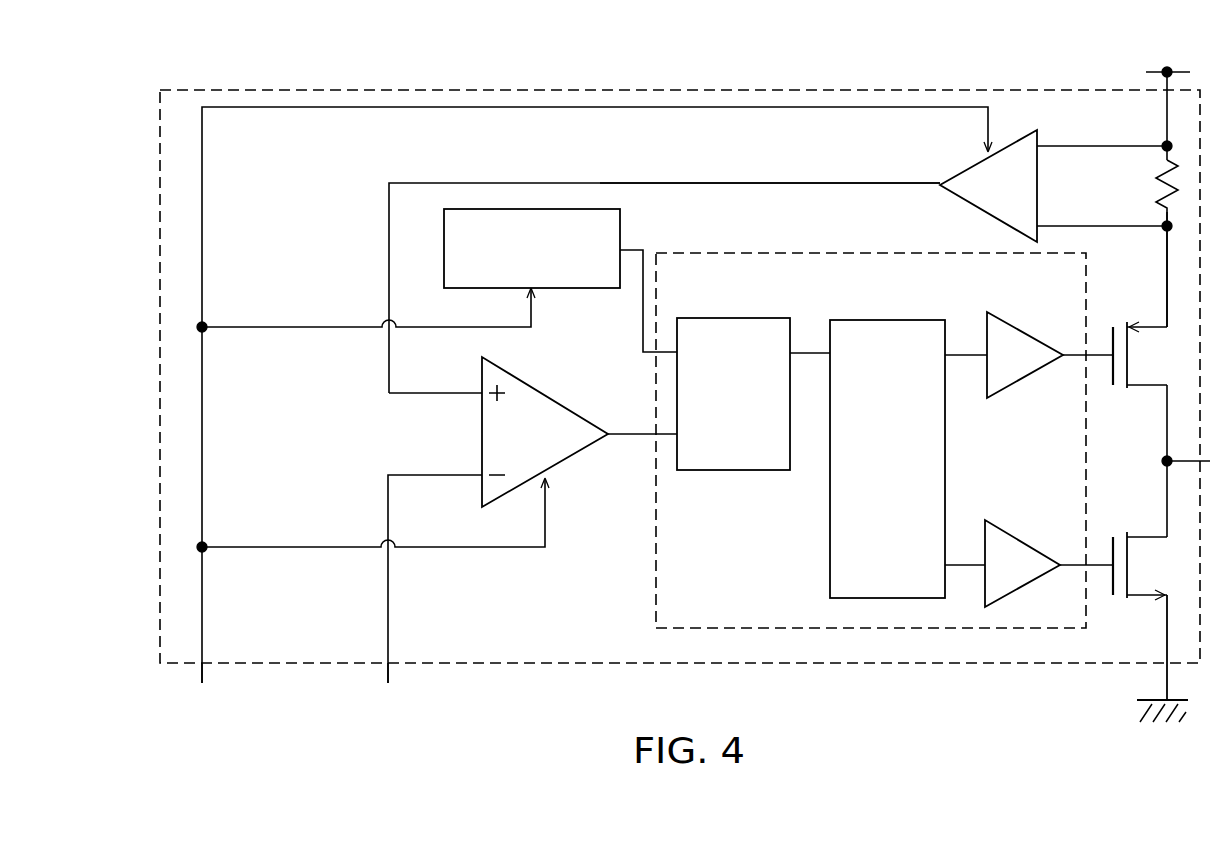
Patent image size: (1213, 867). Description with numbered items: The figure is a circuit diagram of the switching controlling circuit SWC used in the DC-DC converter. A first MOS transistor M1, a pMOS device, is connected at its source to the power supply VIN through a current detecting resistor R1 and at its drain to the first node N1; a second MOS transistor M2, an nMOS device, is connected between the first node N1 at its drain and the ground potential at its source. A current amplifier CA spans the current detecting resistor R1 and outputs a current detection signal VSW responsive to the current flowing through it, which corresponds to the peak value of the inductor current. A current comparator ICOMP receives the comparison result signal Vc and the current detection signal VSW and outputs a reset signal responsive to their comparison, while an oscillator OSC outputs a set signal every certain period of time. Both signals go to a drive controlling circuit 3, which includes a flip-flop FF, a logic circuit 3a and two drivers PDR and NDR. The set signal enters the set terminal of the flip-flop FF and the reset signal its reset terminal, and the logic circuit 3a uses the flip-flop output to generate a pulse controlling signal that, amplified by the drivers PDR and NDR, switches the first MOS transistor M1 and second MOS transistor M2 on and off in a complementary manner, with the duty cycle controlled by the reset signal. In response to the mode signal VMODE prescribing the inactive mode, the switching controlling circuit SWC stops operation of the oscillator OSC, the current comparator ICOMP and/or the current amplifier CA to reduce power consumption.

The switching controlling circuit SWC is at (773, 90).
The drive controlling circuit 3 is at (833, 252).
The logic circuit 3a is at (887, 320).
The oscillator OSC is at (622, 222).
The current comparator ICOMP is at (551, 400).
The flip-flop FF is at (733, 318).
The driver PDR is at (1022, 330).
The driver NDR is at (1020, 535).
The first MOS transistor M1 is at (1150, 324).
The second MOS transistor M2 is at (1140, 600).
The first node N1 is at (1162, 461).
The current detecting resistor R1 is at (1160, 186).
The current amplifier CA is at (1005, 148).
The power supply VIN is at (1168, 98).
The current detection signal VSW is at (770, 169).
The mode signal VMODE is at (197, 690).
The comparison result signal Vc is at (384, 690).